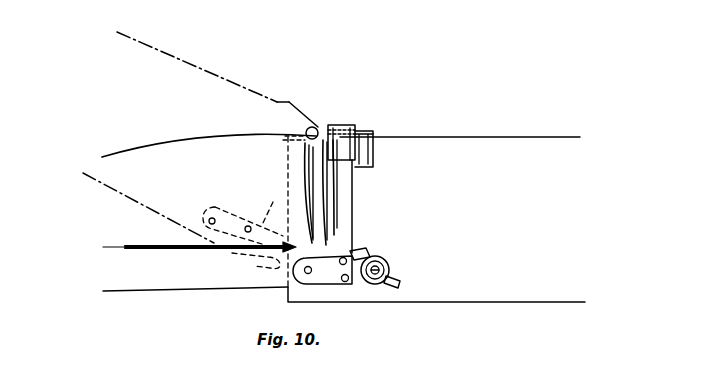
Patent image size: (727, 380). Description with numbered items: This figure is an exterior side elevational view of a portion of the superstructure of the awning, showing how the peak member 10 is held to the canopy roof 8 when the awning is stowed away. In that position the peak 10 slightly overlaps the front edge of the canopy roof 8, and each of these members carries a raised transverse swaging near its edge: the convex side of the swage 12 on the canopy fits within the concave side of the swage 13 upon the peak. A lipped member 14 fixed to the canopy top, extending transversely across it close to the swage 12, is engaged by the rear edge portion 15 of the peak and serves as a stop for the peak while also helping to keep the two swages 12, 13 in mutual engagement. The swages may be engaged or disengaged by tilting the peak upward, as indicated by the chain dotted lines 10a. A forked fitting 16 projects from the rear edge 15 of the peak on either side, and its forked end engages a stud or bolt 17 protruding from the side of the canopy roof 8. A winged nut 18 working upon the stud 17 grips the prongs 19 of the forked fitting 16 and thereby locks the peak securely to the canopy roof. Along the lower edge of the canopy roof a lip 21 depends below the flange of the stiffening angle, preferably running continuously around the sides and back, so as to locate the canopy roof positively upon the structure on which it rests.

The canopy roof 8 is at (477, 143).
The peak member 10 is at (209, 138).
The chain dotted lines 10a is at (192, 58).
The swage 12 is at (310, 140).
The swage 13 is at (318, 127).
The lipped member 14 is at (342, 127).
The rear edge portion 15 is at (291, 103).
The forked fitting 16 is at (240, 216).
The stud 17 is at (382, 271).
The winged nut 18 is at (400, 282).
The prongs 19 is at (386, 255).
The lip 21 is at (523, 293).